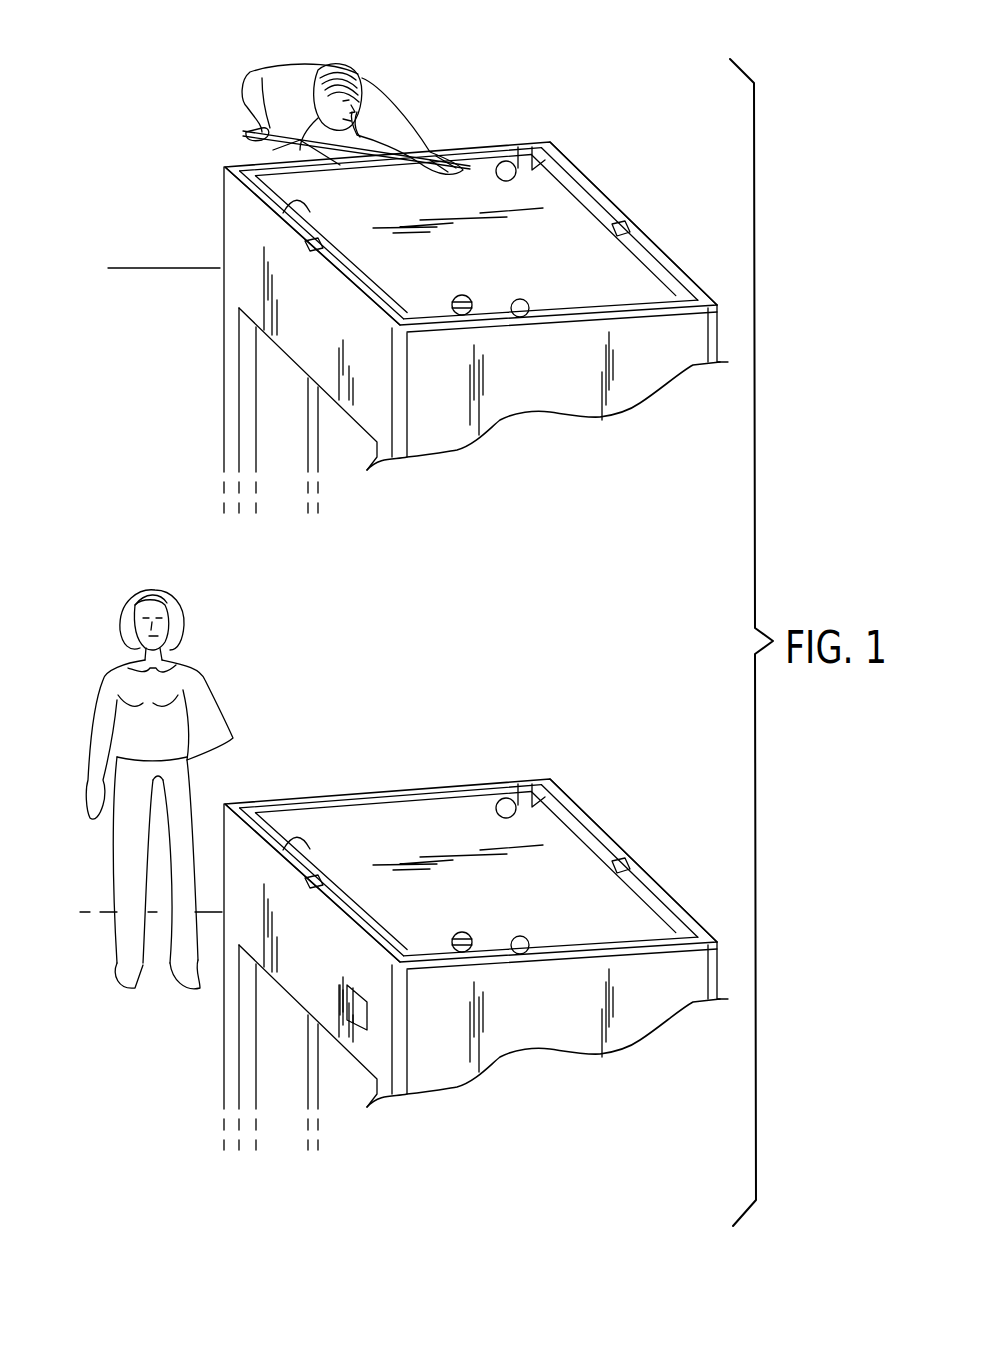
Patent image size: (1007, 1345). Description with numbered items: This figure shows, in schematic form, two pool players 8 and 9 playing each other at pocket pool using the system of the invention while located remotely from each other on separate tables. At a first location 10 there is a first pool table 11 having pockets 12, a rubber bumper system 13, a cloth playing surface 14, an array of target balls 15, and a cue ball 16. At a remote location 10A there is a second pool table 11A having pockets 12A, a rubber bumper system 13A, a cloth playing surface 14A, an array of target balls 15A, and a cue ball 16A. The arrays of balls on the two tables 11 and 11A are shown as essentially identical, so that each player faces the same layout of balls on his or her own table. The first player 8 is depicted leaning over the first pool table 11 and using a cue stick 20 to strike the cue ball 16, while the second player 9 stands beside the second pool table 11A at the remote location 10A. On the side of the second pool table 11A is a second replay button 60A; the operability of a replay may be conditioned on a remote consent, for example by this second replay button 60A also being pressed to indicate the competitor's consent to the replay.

The first player 8 is at (377, 98).
The second player 9 is at (197, 657).
The first location 10 is at (580, 103).
The remote location 10A is at (476, 931).
The first pool table 11 is at (588, 178).
The second pool table 11A is at (624, 860).
The pockets 12 is at (527, 150).
The pockets 12A is at (534, 762).
The rubber bumper system 13 is at (257, 196).
The rubber bumper system 13A is at (311, 803).
The cloth playing surface 14 is at (370, 247).
The cloth playing surface 14A is at (448, 799).
The array of target balls 15 is at (520, 298).
The array of target balls 15A is at (490, 920).
The cue ball 16 is at (497, 168).
The cue ball 16A is at (483, 770).
The cue stick 20 is at (300, 137).
The second replay button 60A is at (330, 987).